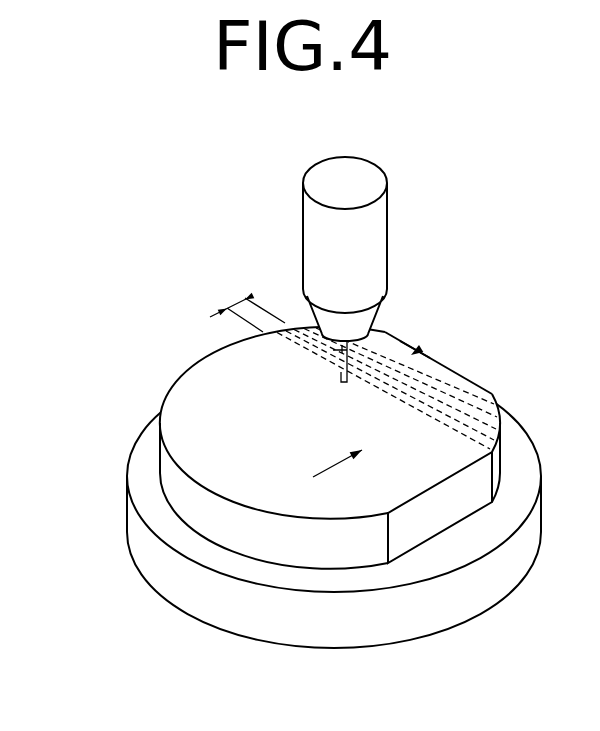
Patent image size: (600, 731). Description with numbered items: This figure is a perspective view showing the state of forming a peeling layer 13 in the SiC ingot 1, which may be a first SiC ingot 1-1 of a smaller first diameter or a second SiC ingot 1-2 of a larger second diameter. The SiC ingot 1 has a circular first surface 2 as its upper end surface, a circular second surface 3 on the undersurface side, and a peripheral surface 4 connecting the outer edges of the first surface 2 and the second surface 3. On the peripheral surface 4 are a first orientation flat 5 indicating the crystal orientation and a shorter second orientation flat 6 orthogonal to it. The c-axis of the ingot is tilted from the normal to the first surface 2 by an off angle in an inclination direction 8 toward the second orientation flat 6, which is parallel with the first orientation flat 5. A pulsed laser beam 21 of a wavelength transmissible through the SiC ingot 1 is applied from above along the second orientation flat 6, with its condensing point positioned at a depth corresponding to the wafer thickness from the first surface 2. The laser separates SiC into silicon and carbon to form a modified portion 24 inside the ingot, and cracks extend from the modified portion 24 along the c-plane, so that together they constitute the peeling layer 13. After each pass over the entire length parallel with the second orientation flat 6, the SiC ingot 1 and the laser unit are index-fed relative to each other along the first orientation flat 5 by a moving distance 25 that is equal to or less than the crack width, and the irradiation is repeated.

The SiC ingot 1 is at (299, 465).
The first SiC ingot 1-1 is at (357, 465).
The second SiC ingot 1-2 is at (357, 465).
The first surface 2 is at (275, 484).
The second surface 3 is at (362, 570).
The peripheral surface 4 is at (306, 545).
The first orientation flat 5 is at (437, 510).
The second orientation flat 6 is at (445, 362).
The inclination direction 8 is at (333, 466).
The peeling layer 13 is at (422, 348).
The pulsed laser beam 21 is at (296, 333).
The modified portion 24 is at (395, 338).
The moving distance 25 is at (242, 304).